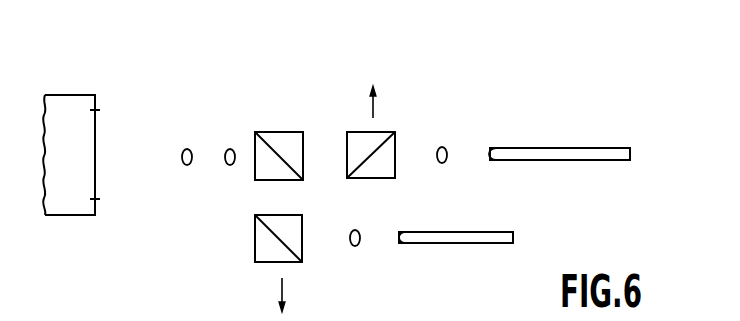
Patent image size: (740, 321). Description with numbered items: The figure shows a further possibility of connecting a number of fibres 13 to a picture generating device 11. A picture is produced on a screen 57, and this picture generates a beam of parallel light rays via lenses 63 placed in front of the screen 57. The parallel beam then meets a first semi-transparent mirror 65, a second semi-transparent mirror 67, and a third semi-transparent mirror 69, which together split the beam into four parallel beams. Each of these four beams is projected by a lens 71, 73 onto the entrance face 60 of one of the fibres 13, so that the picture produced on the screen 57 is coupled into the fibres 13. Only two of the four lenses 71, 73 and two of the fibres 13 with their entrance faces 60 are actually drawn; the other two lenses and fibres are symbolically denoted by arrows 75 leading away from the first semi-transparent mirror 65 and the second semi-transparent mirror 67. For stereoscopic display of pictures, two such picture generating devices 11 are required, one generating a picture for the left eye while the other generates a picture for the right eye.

The screen 57 is at (95, 150).
The picture generating device 11 is at (265, 107).
The first semi-transparent mirror 65 is at (277, 150).
The lenses 63 is at (229, 165).
The third semi-transparent mirror 69 is at (378, 150).
The arrows 75 is at (375, 100).
The lens 73 is at (445, 148).
The fibres 13 is at (553, 150).
The entrance face 60 is at (498, 160).
The second semi-transparent mirror 67 is at (275, 238).
The lens 71 is at (358, 245).